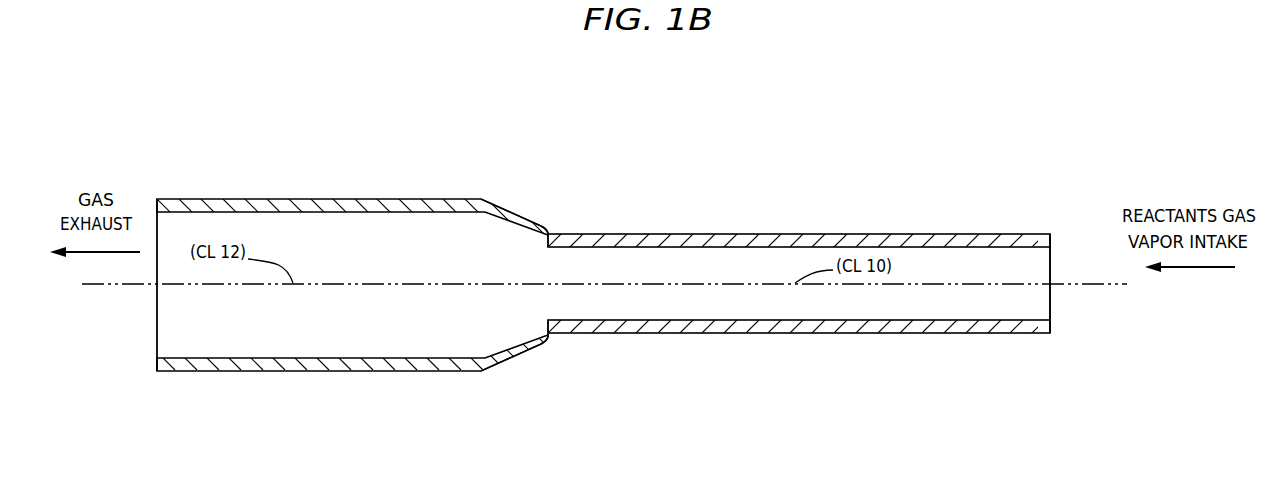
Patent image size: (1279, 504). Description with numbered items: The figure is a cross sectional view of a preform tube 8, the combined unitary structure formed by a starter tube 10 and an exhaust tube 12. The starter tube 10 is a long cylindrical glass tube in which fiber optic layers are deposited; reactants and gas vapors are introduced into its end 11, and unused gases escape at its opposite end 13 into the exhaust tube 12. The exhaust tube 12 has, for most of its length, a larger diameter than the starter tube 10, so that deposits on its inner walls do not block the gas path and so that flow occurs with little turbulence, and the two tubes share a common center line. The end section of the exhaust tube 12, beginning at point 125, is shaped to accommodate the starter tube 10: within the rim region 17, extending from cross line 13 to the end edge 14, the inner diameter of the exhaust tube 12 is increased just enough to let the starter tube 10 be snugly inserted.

The preform tube 8 is at (457, 94).
The starter tube 10 is at (722, 233).
The end of starter tube 11 is at (1045, 266).
The exhaust tube 12 is at (307, 199).
The end of starter tube / cross line 13 is at (548, 240).
The end edge of exhaust tube 14 is at (554, 229).
The rim region 17 is at (528, 190).
The point beginning end section of exhaust tube 125 is at (440, 213).